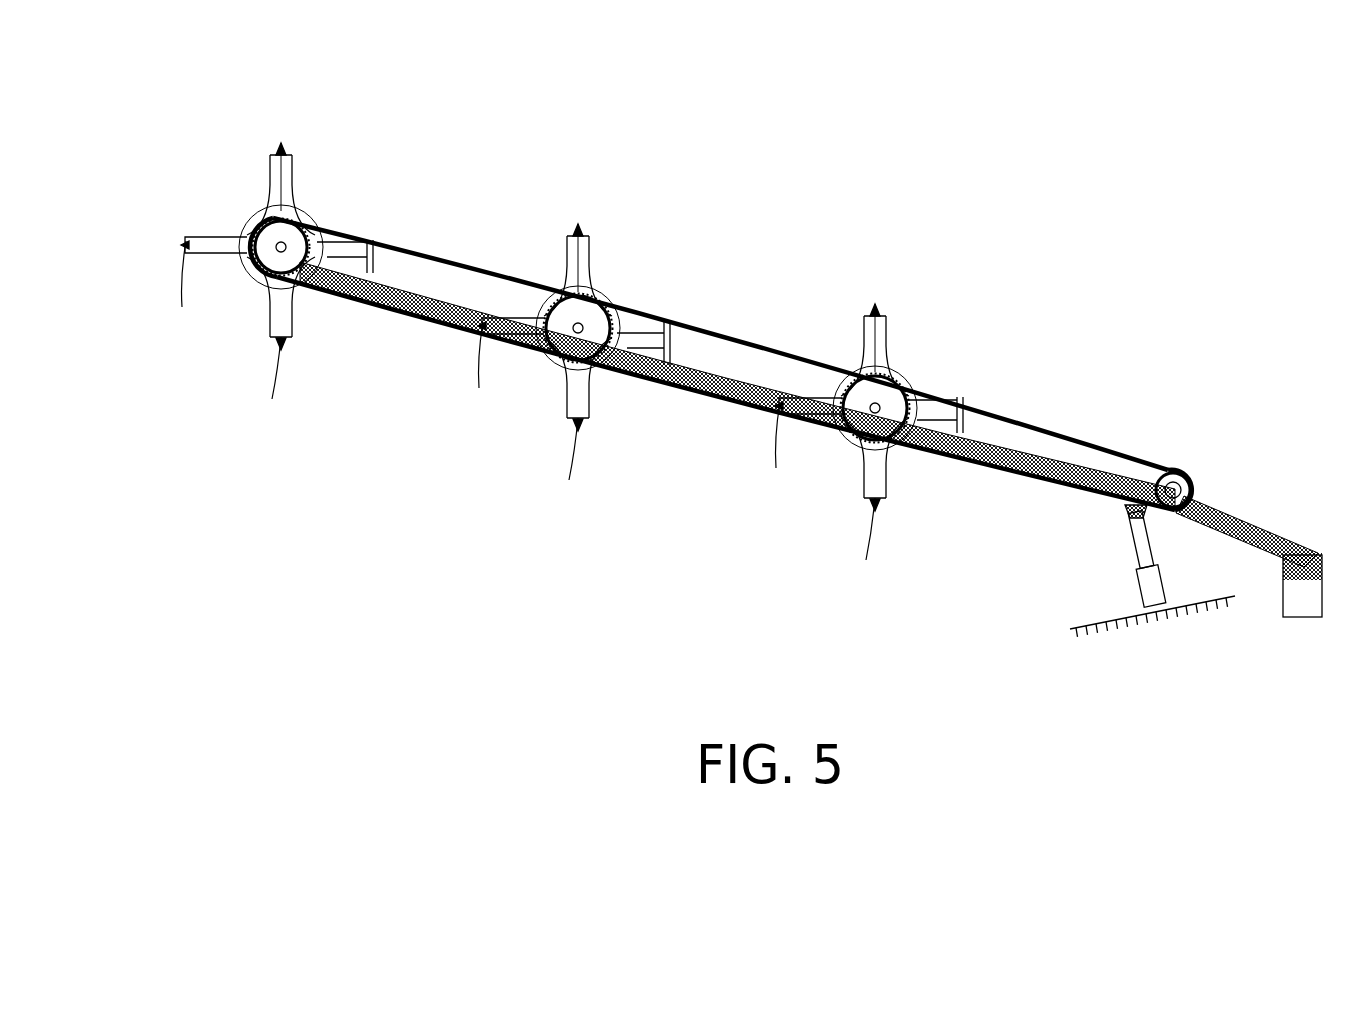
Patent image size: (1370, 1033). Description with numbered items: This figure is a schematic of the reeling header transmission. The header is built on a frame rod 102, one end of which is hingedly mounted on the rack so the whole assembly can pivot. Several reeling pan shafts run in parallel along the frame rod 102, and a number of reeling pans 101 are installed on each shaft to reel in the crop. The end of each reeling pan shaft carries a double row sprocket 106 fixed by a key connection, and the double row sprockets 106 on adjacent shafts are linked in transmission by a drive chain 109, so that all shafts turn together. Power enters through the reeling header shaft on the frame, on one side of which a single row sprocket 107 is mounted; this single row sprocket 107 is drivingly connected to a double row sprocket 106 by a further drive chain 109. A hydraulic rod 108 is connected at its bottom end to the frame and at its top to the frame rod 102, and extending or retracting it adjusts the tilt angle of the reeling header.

The reeling pan 101 is at (292, 205).
The frame rod 102 is at (443, 303).
The drive chain 109 is at (688, 322).
The double row sprocket 106 is at (883, 343).
The single row sprocket 107 is at (1170, 462).
The hydraulic rod 108 is at (1133, 545).